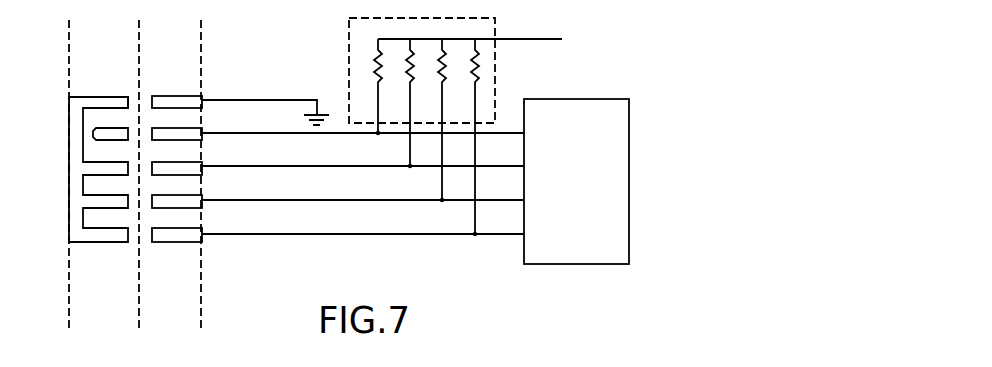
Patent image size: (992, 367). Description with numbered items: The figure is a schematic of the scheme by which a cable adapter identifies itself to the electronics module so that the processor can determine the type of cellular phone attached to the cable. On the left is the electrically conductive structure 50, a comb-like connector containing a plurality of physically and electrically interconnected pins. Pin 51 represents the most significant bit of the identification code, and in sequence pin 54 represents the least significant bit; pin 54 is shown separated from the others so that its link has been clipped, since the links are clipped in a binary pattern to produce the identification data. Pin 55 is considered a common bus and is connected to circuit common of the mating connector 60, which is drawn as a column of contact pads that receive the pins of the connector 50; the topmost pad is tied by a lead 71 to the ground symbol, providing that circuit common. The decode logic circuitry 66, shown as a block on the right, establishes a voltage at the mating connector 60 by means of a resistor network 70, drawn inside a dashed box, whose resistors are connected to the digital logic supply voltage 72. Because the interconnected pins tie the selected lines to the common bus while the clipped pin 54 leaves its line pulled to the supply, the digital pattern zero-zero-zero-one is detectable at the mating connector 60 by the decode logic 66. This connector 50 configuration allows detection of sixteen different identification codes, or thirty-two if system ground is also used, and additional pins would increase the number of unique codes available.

The electrically conductive structure 50 is at (107, 272).
The pin 51 is at (100, 242).
The pin 54 is at (103, 128).
The pin 55 is at (110, 97).
The mating connector 60 is at (180, 268).
The decode logic circuitry 66 is at (623, 139).
The resistor network 70 is at (339, 43).
The ground lead 71 is at (252, 99).
The digital logic supply voltage 72 is at (562, 39).